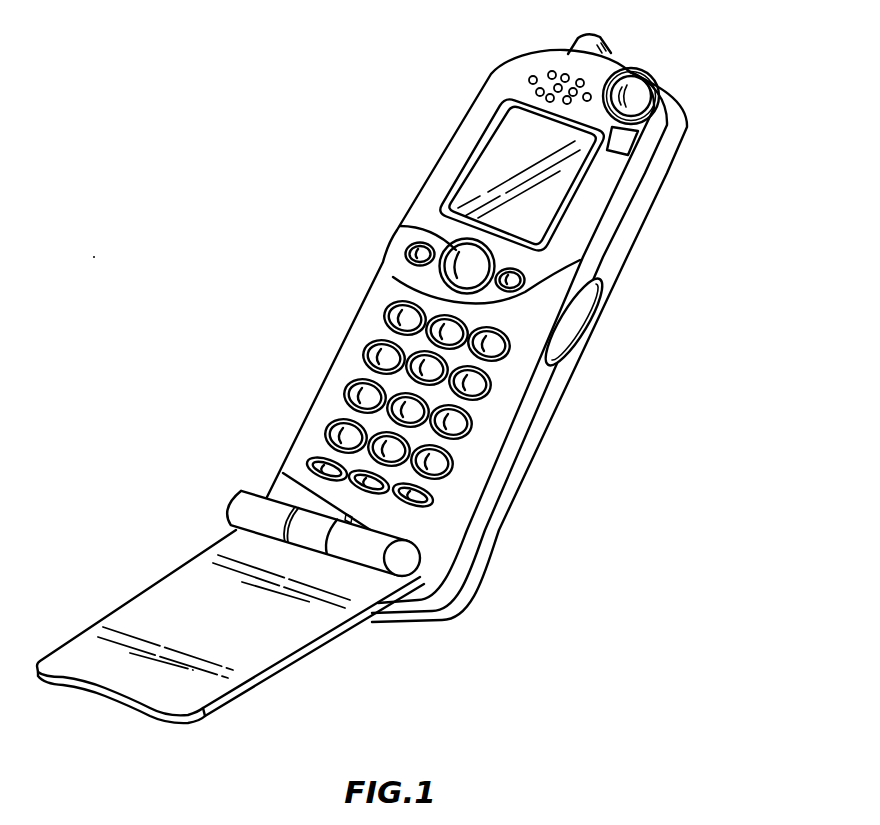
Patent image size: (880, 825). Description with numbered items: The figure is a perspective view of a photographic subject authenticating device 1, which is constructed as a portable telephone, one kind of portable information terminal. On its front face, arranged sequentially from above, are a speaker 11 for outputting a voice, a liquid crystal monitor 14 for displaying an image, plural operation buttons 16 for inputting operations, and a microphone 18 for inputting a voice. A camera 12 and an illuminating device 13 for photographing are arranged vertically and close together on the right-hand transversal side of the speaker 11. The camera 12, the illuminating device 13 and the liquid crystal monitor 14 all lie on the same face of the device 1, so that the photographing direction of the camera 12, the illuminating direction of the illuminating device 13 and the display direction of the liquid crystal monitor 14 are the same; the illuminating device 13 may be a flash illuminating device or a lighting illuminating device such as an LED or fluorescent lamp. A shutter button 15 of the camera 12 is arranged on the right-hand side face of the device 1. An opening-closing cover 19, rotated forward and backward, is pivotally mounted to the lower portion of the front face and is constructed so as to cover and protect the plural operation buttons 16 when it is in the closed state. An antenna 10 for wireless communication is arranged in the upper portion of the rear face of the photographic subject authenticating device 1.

The photographic subject authenticating device 1 is at (347, 102).
The antenna 10 is at (596, 35).
The speaker 11 is at (530, 78).
The camera 12 is at (652, 78).
The illuminating device 13 is at (625, 140).
The liquid crystal monitor 14 is at (550, 186).
The shutter button 15 is at (583, 325).
The operation buttons 16 is at (417, 243).
The microphone 18 is at (285, 473).
The opening-closing cover 19 is at (172, 602).